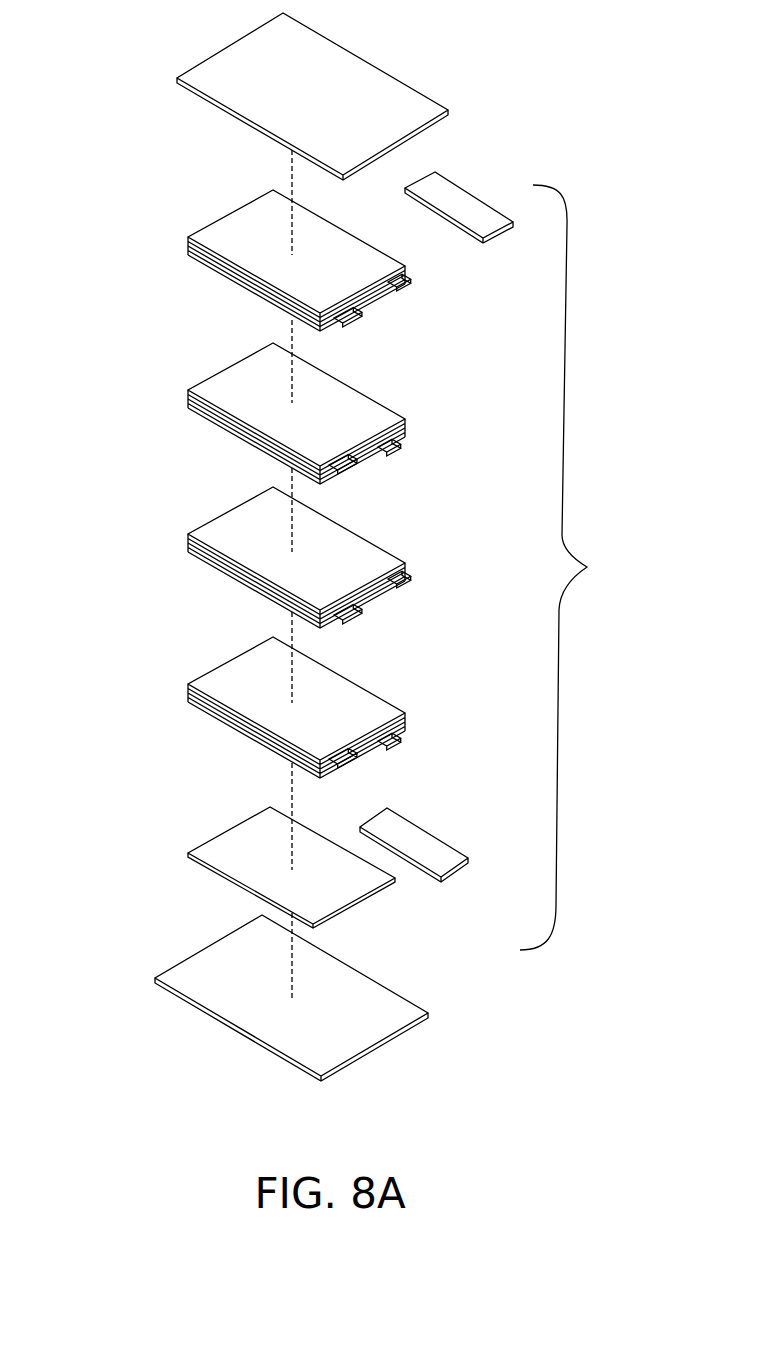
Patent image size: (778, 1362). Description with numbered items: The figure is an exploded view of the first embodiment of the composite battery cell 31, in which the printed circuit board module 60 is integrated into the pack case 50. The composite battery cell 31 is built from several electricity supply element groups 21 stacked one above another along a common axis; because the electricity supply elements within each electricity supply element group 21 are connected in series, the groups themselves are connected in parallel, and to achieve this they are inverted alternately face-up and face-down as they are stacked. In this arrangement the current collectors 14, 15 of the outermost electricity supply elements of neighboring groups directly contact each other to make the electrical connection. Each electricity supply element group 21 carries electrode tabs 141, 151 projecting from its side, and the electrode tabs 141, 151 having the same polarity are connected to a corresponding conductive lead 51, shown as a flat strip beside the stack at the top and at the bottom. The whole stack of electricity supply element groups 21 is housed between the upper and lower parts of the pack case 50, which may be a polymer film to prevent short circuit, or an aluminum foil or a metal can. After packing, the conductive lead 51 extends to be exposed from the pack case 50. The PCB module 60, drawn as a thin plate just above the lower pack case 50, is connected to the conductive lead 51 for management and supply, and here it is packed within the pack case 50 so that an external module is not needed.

The current collector 14 is at (332, 235).
The current collector 15 is at (358, 398).
The electricity supply element group 21 is at (316, 489).
The composite battery cell 31 is at (577, 567).
The pack case 50 is at (228, 43).
The conductive lead 51 is at (472, 196).
The printed circuit board (PCB) module 60 is at (225, 835).
The electrode tab 141 is at (400, 292).
The electrode tab 151 is at (358, 330).